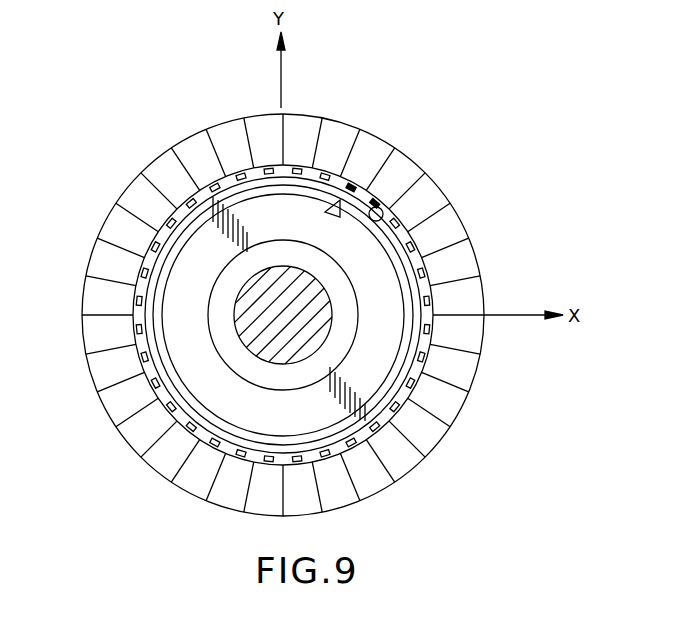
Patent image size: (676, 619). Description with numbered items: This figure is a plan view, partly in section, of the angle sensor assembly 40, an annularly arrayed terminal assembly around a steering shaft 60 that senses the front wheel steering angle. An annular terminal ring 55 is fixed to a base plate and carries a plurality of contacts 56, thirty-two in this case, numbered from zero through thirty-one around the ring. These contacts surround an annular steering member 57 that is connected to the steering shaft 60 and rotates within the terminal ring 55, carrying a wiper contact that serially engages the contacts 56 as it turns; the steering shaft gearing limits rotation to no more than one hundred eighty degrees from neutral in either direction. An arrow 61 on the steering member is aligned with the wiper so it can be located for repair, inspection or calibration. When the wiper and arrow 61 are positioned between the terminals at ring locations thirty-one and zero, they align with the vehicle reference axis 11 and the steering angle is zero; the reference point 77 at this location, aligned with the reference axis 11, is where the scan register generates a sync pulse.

The angle sensor assembly 40 is at (503, 250).
The annular terminal ring 55 is at (482, 345).
The contacts 56 is at (382, 213).
The annular steering member 57 is at (154, 240).
The steering shaft 60 is at (252, 352).
The arrow 61 is at (294, 315).
The reference point 77 is at (283, 110).
The vehicle reference axis 11 is at (280, 60).